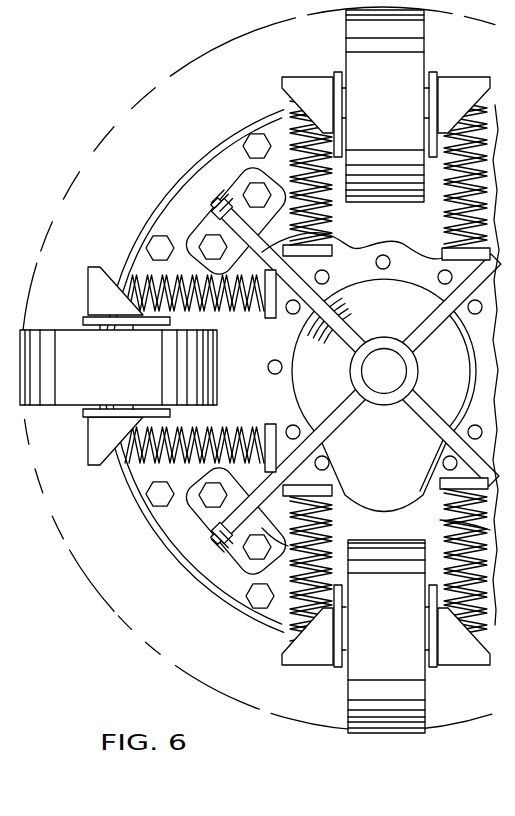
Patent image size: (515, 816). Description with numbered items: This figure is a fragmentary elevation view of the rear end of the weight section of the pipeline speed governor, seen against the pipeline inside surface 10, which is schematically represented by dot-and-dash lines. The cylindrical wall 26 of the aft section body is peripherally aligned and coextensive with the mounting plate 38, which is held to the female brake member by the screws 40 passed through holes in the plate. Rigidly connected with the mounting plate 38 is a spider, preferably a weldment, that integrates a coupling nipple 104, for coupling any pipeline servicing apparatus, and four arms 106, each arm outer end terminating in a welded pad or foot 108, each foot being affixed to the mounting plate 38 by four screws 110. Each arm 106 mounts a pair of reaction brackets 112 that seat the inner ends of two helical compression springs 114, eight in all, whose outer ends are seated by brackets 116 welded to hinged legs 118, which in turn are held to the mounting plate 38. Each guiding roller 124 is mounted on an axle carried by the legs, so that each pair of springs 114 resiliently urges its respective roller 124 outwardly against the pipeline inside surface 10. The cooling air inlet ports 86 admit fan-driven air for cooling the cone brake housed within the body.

The pipeline inside surface 10 is at (113, 127).
The cylindrical wall 26 is at (185, 571).
The mounting plate 38 is at (173, 218).
The screws 40 is at (255, 137).
The cooling air inlet ports 86 is at (383, 269).
The coupling nipple 104 is at (420, 368).
The arms 106 is at (418, 320).
The pad or foot 108 is at (233, 185).
The screws 110 is at (218, 203).
The reaction brackets 112 is at (385, 251).
The helical compression springs 114 is at (440, 215).
The brackets 116 is at (320, 106).
The hinged legs 118 is at (338, 70).
The guiding rollers 124 is at (398, 124).